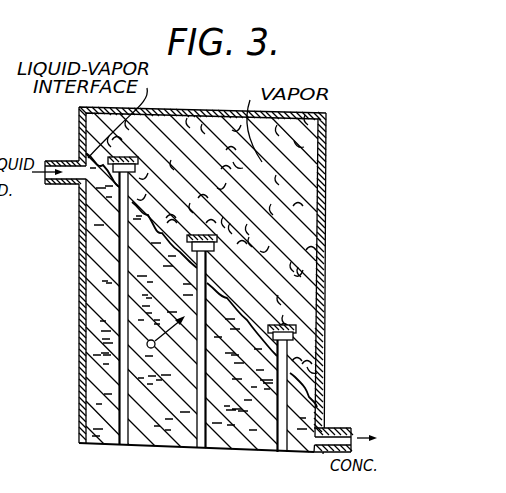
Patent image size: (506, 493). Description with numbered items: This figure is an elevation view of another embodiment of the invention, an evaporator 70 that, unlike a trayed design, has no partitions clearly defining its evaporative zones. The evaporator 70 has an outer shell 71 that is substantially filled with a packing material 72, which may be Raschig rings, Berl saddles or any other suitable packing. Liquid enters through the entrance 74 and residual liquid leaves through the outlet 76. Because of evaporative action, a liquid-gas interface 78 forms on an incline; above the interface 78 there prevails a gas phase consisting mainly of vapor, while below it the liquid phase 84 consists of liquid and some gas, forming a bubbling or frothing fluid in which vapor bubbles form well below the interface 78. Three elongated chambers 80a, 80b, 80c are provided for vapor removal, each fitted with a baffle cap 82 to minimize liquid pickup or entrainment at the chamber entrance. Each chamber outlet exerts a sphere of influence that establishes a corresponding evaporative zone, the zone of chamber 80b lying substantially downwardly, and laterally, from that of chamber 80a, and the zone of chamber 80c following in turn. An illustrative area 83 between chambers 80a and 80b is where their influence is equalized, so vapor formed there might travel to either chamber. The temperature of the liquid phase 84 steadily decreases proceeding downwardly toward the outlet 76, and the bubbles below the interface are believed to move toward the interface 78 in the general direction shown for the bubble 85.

The evaporator 70 is at (200, 297).
The outer shell 71 is at (325, 167).
The packing material 72 is at (306, 197).
The entrance 74 is at (65, 162).
The outlet 76 is at (341, 428).
The liquid-gas interface 78 is at (291, 384).
The elongated chamber 80a is at (118, 283).
The elongated chamber 80b is at (196, 388).
The elongated chamber 80c is at (317, 397).
The baffle cap 82 is at (296, 325).
The area 83 is at (153, 237).
The liquid phase 84 is at (153, 432).
The bubble 85 is at (147, 344).